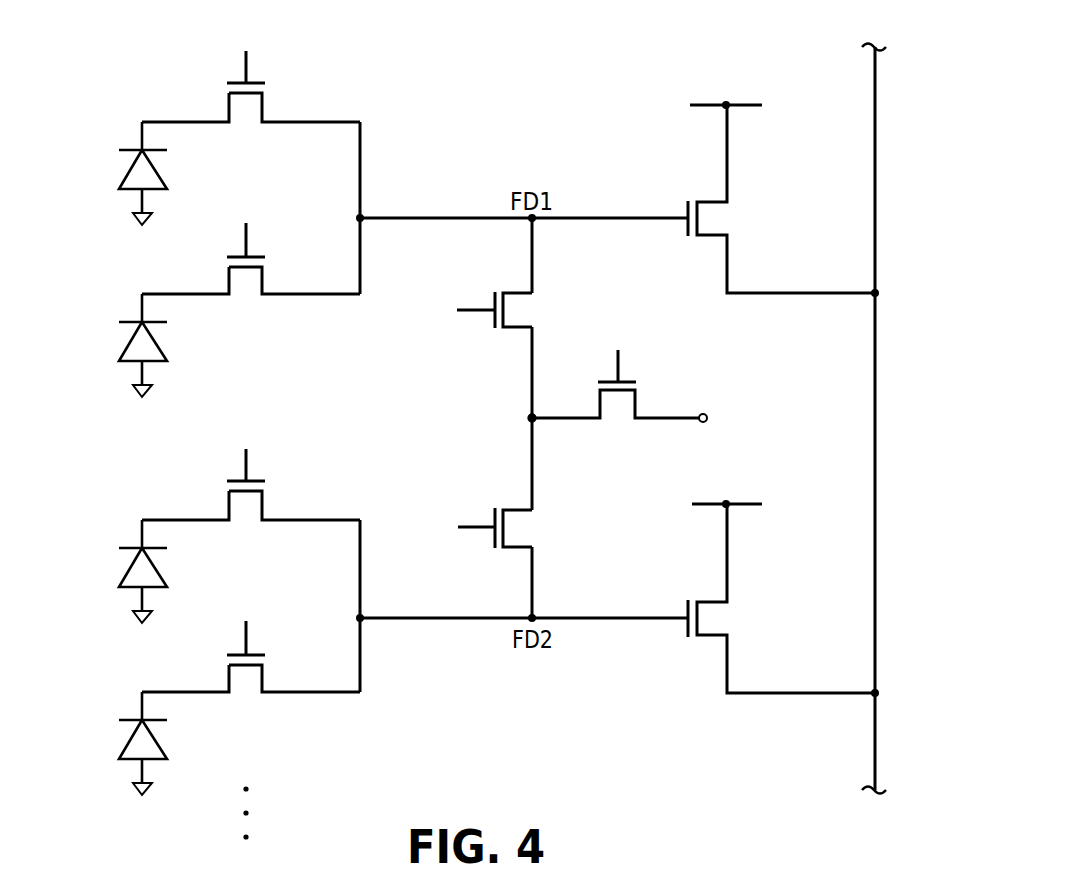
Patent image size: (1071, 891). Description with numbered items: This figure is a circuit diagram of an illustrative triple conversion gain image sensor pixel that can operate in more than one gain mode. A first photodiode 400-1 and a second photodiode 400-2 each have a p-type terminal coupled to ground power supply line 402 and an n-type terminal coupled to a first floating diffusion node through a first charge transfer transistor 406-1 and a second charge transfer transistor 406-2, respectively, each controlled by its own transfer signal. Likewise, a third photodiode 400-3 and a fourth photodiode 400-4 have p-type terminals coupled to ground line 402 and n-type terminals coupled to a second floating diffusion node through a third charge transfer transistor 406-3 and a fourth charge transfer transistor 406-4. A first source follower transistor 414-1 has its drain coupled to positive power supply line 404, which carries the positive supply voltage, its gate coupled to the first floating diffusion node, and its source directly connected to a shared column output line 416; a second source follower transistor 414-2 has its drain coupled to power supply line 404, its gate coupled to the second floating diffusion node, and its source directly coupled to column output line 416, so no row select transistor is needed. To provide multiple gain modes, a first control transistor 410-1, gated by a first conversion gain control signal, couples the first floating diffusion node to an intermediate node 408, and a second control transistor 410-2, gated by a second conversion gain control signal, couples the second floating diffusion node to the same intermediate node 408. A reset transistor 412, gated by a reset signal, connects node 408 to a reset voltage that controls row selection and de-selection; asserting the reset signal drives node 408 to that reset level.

The first photodiode 400-1 is at (141, 174).
The second photodiode 400-2 is at (141, 346).
The third photodiode 400-3 is at (141, 572).
The fourth photodiode 400-4 is at (141, 744).
The ground power supply line 402 is at (141, 221).
The first charge transfer transistor 406-1 is at (247, 114).
The second charge transfer transistor 406-2 is at (247, 286).
The third charge transfer transistor 406-3 is at (247, 512).
The fourth charge transfer transistor 406-4 is at (247, 684).
The first control transistor 410-1 is at (515, 324).
The second control transistor 410-2 is at (515, 512).
The intermediate node 408 is at (528, 418).
The reset transistor 412 is at (617, 414).
The first source follower transistor 414-1 is at (708, 231).
The second source follower transistor 414-2 is at (708, 631).
The positive power supply line 404 is at (703, 109).
The shared column output line 416 is at (872, 118).